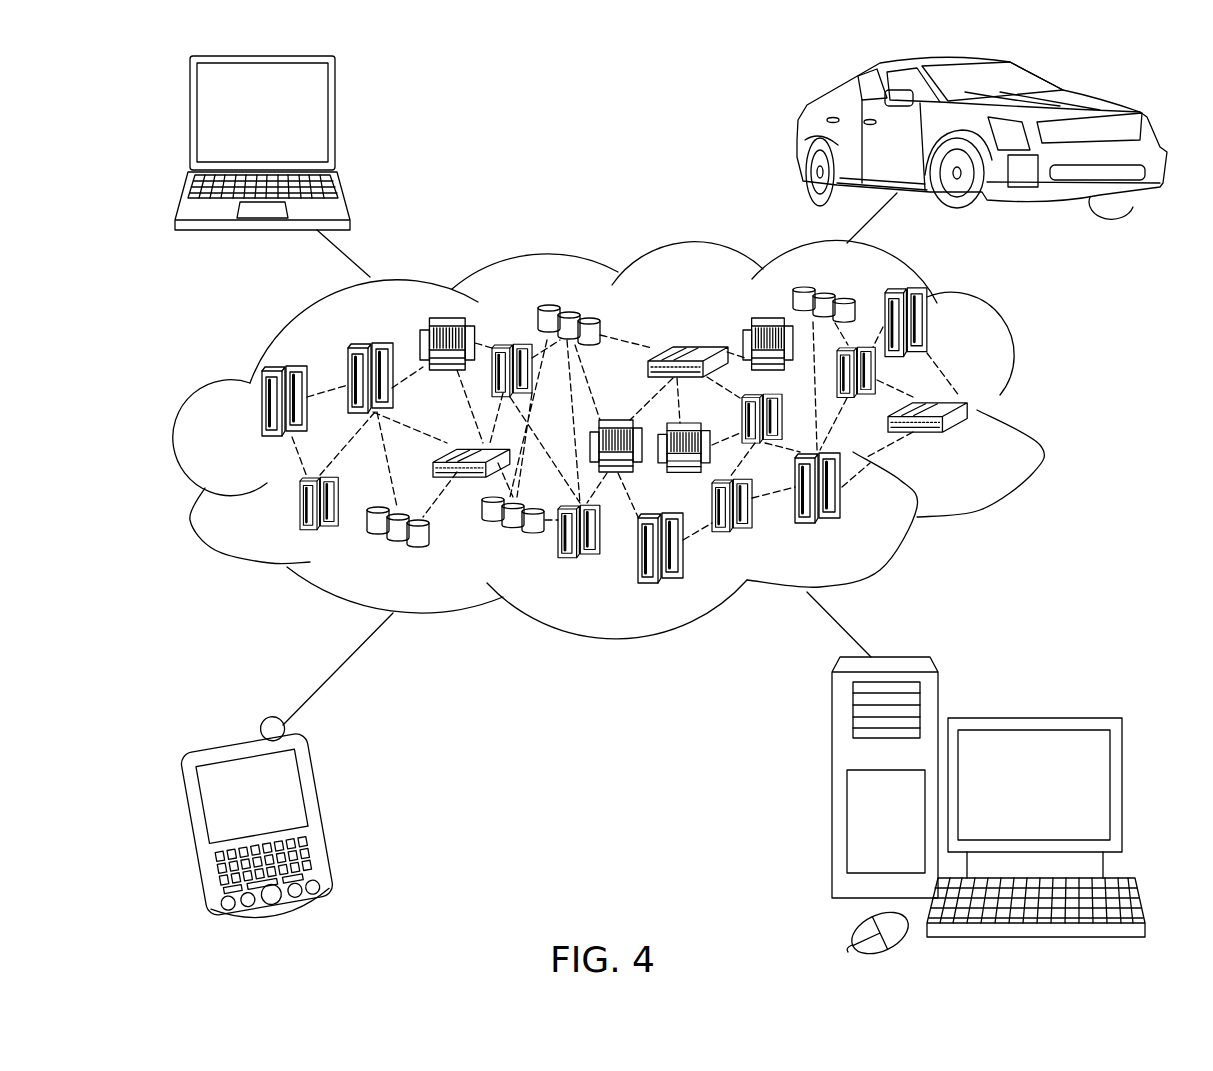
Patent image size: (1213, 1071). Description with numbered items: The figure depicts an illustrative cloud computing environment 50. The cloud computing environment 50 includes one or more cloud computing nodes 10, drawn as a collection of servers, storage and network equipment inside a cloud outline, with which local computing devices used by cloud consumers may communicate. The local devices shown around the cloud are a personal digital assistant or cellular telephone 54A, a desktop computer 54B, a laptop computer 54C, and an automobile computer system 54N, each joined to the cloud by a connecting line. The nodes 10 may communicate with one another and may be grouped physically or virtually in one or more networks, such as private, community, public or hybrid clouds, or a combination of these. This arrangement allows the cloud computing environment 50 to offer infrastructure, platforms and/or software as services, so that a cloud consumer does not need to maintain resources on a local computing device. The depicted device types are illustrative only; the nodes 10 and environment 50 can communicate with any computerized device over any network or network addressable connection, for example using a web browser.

The laptop computer 54C is at (335, 120).
The automobile computer system 54N is at (795, 142).
The personal digital assistant or cellular telephone 54A is at (323, 815).
The desktop computer 54B is at (1033, 718).
The cloud computing environment 50 is at (1022, 418).
The cloud computing node 10 is at (981, 448).